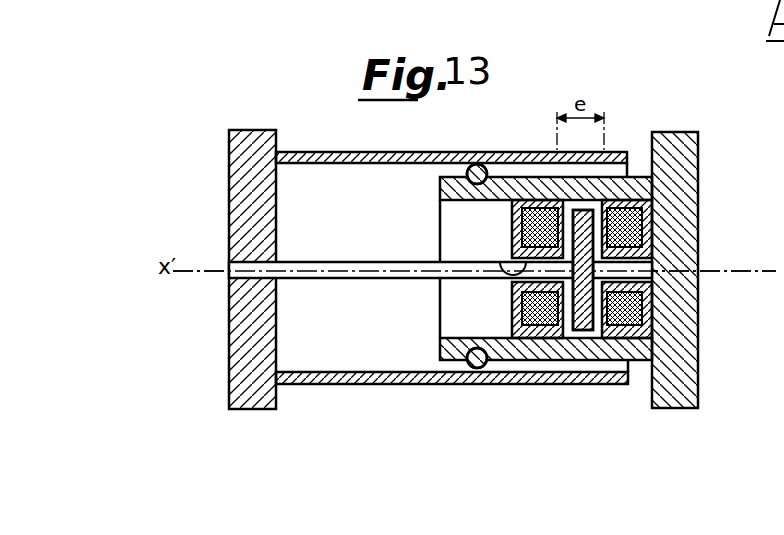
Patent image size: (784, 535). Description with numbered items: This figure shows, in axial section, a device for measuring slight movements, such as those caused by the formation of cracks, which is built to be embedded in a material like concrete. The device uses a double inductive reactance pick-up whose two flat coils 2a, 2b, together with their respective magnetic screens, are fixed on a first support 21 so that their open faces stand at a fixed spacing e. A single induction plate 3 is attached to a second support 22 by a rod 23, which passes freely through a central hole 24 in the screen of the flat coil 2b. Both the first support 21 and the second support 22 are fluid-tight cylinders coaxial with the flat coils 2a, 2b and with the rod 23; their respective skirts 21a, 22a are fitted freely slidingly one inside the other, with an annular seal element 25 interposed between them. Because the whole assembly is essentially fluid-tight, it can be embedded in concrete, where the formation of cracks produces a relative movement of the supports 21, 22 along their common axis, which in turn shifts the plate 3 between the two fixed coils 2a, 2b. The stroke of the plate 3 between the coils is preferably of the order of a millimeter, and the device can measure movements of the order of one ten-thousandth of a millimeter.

The second support 22 is at (260, 390).
The skirt of second support 22a is at (353, 151).
The rod 23 is at (348, 273).
The central hole 24 is at (515, 266).
The annular seal element 25 is at (473, 368).
The first support 21 is at (672, 170).
The skirt of first support 21a is at (523, 350).
The flat coil 2a is at (640, 227).
The flat coil 2b is at (545, 323).
The single induction plate 3 is at (594, 318).